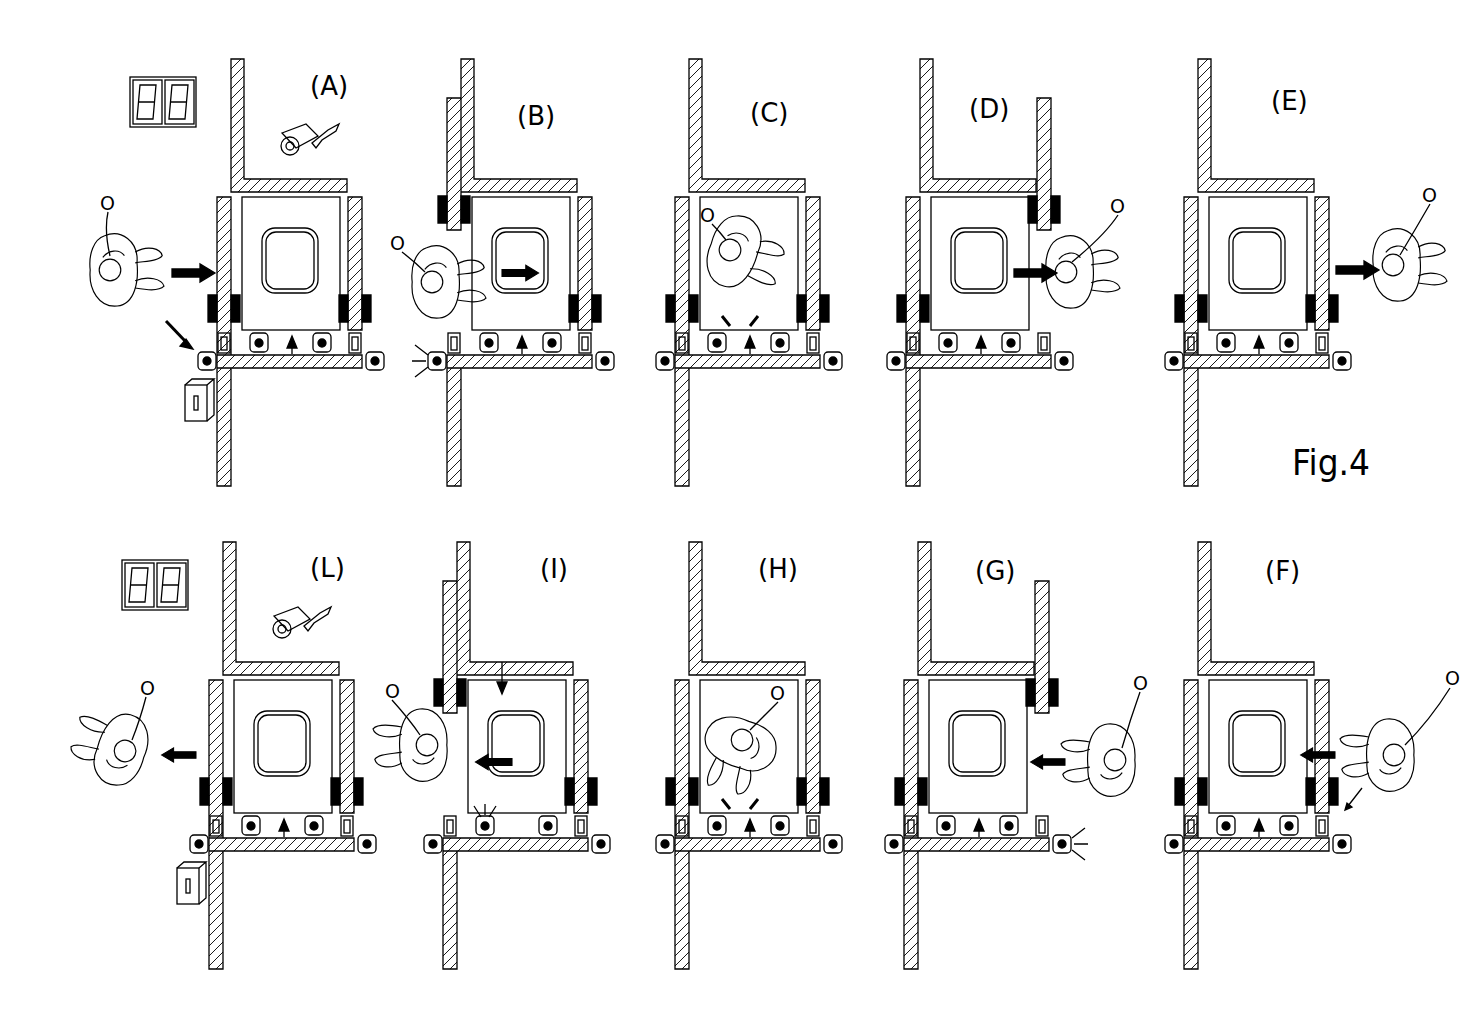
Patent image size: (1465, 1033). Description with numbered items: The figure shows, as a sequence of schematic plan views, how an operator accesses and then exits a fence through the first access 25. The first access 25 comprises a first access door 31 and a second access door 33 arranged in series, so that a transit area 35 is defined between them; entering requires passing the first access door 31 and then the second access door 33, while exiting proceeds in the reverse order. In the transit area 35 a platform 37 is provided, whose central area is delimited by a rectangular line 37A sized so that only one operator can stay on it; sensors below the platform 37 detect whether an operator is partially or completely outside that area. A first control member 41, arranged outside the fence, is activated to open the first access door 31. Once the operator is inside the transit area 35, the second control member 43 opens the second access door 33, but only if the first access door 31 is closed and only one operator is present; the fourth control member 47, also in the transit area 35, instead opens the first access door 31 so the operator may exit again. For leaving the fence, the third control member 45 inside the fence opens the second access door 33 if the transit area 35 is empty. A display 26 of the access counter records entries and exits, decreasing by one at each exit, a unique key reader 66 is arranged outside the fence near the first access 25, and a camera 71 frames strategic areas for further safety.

The display of the access counter 26 is at (141, 358).
The camera 71 is at (295, 365).
The first access door 31 is at (731, 514).
The second access door 33 is at (855, 455).
The platform 37 is at (793, 514).
The rectangular line 37A is at (762, 486).
The third control member 45 is at (861, 598).
The first control member 41 is at (668, 611).
The fourth control member 47 is at (745, 611).
The second control member 43 is at (807, 611).
The transit area 35 is at (777, 625).
The first access 25 is at (144, 349).
The unique key reader 66 is at (168, 641).